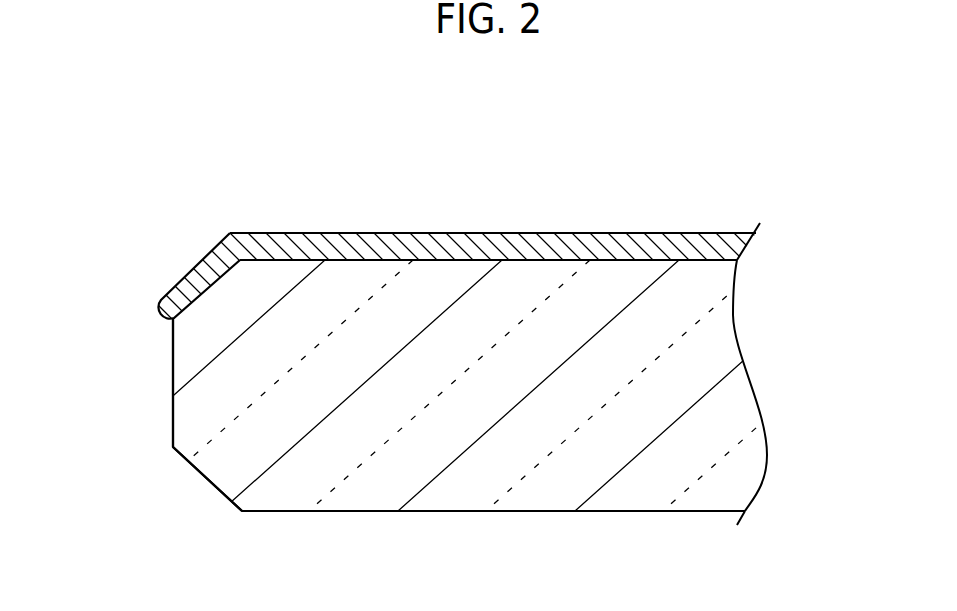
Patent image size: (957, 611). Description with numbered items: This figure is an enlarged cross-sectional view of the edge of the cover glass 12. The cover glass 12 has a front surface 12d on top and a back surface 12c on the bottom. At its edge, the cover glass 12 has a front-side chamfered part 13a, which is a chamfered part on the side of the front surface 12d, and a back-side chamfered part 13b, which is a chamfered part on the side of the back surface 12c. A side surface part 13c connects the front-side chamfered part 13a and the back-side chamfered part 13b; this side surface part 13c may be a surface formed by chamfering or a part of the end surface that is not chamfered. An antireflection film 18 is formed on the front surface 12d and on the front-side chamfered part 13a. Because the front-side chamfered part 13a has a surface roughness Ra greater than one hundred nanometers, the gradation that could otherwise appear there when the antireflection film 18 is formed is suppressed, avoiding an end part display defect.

The cover glass 12 is at (497, 322).
The back surface 12c is at (345, 513).
The front surface 12d is at (354, 233).
The front-side chamfered part 13a is at (193, 270).
The back-side chamfered part 13b is at (208, 478).
The side surface part 13c is at (173, 400).
The antireflection film 18 is at (652, 233).